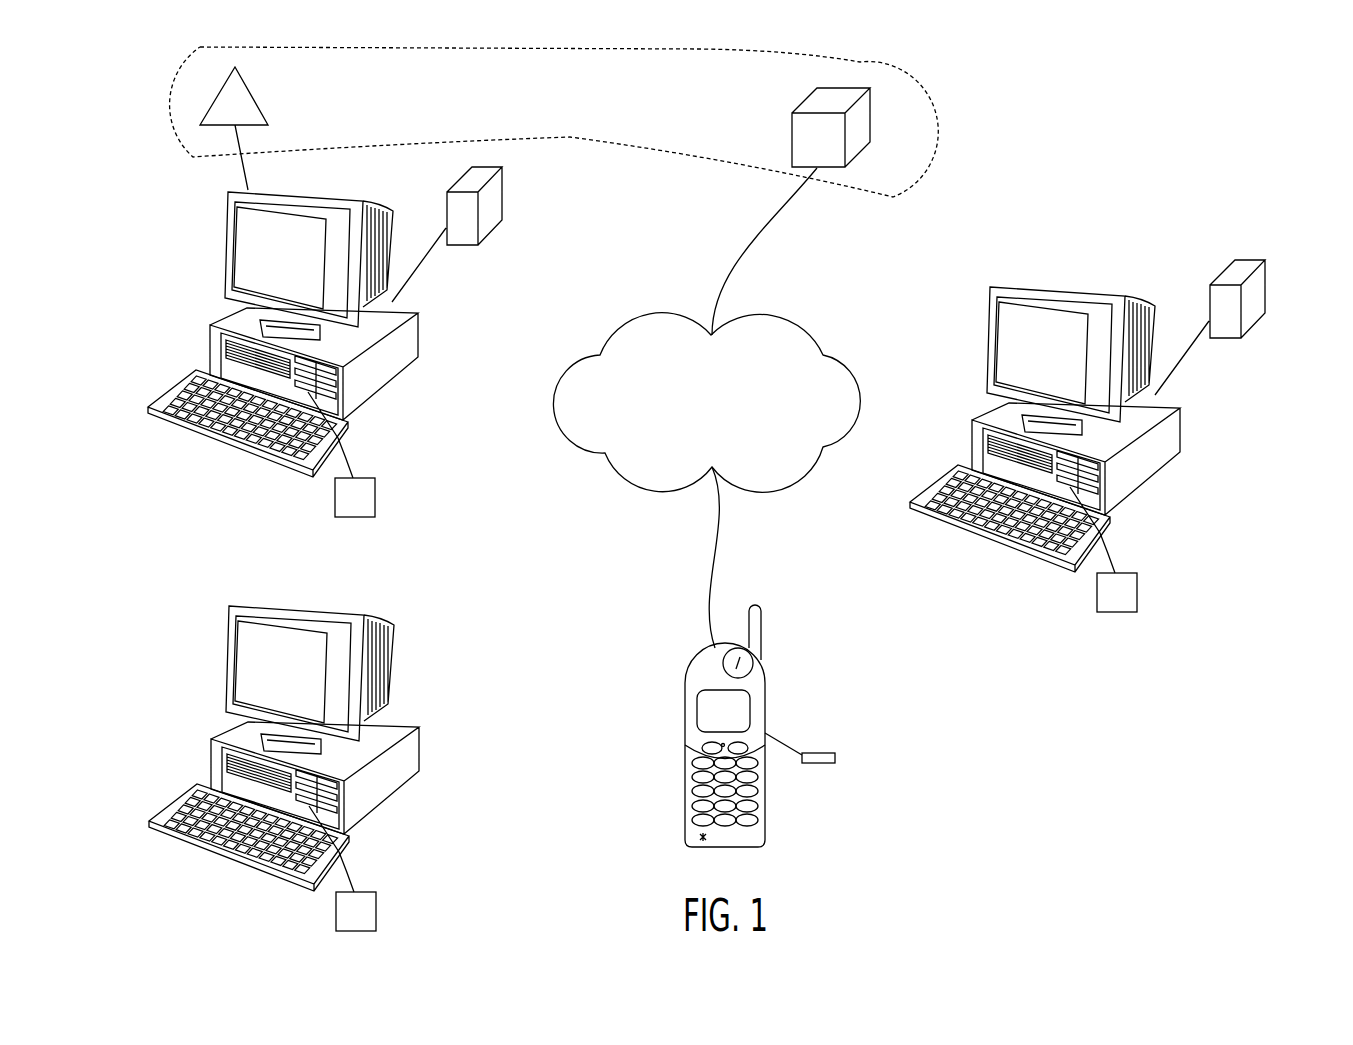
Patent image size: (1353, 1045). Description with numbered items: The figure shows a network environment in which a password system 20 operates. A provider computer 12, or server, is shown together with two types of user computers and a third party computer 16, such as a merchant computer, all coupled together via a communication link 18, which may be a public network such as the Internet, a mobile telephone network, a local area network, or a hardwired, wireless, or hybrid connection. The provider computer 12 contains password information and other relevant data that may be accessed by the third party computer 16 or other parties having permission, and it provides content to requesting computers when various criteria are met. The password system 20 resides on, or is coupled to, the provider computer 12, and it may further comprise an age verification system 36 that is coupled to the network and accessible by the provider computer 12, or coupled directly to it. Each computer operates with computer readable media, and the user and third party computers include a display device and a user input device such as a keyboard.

The provider computer 12 is at (302, 357).
The third party computer 16 is at (1073, 417).
The communication link 18 is at (663, 310).
The password system 20 is at (253, 95).
The age verification system 36 is at (870, 115).